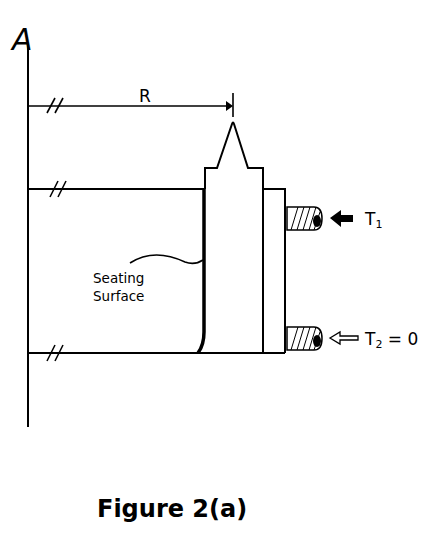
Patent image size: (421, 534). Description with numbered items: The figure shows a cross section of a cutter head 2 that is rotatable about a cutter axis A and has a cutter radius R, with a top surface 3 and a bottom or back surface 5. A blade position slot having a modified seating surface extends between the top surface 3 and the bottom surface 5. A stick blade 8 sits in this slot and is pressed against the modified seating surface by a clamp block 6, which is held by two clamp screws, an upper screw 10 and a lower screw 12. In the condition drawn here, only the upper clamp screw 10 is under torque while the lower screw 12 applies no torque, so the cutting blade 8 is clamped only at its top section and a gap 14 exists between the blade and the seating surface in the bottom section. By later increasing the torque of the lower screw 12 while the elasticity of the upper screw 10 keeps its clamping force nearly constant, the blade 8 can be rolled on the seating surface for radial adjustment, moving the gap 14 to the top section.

The cutter head 2 is at (115, 331).
The top surface 3 is at (125, 188).
The bottom surface 5 is at (82, 355).
The clamp block 6 is at (276, 335).
The stick blade 8 is at (230, 335).
The upper clamp screw 10 is at (303, 206).
The lower clamp screw 12 is at (304, 351).
The gap 14 is at (203, 353).